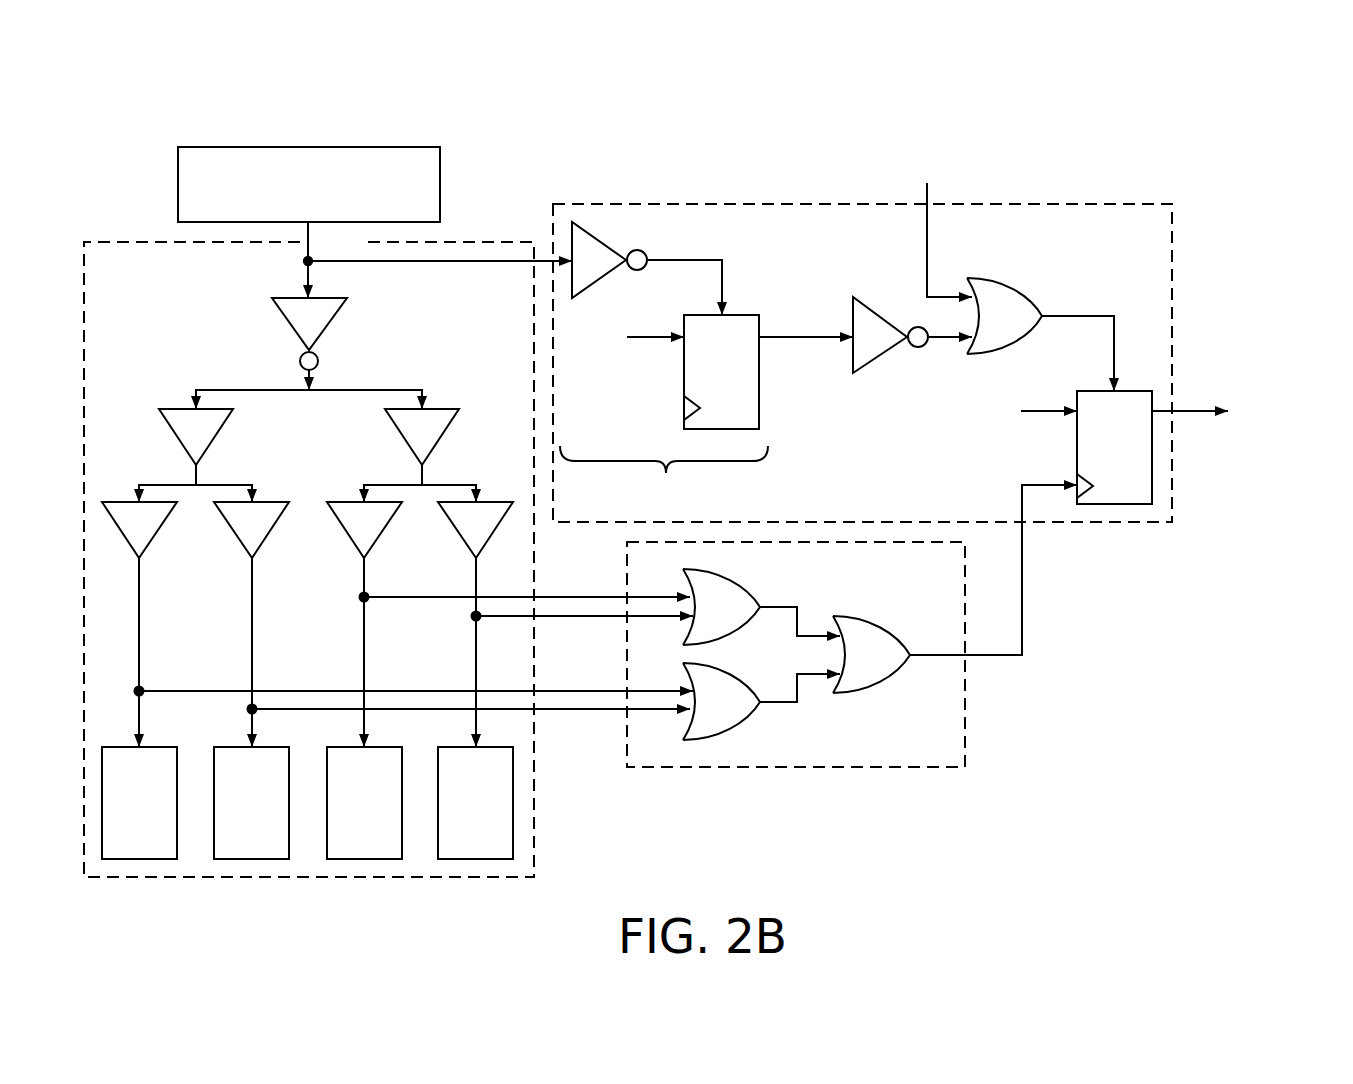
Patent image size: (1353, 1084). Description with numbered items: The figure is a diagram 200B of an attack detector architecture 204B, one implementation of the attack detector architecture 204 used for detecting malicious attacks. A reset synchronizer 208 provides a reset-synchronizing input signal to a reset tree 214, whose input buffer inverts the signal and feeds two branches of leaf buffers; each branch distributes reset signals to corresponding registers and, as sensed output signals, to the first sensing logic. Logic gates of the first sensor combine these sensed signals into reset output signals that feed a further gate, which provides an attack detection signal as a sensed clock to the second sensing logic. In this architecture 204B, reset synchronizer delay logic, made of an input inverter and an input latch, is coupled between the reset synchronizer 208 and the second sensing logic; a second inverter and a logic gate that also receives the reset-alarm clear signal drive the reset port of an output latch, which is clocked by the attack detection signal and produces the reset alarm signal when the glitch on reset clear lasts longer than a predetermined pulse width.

The diagram 200B is at (202, 63).
The attack detector architecture 204 is at (832, 92).
The attack detector architecture 204B is at (880, 92).
The reset synchronizer 208 is at (370, 195).
The reset tree 214 is at (176, 322).